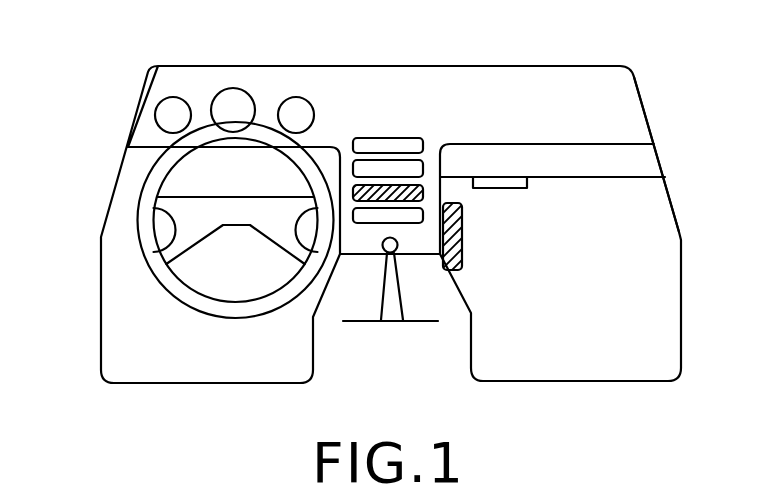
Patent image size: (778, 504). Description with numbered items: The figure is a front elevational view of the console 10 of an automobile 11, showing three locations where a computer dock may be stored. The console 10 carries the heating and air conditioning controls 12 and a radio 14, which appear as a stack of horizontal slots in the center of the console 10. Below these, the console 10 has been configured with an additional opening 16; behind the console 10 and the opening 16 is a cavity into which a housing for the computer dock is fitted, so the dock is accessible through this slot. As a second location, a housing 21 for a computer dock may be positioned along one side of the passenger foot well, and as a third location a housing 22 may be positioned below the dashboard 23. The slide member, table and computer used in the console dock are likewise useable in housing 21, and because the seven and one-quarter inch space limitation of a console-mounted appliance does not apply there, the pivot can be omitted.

The console 10 is at (440, 180).
The automobile 11 is at (126, 103).
The heating and air conditioning controls 12 is at (413, 138).
The radio 14 is at (425, 165).
The additional opening 16 is at (423, 191).
The housing 21 is at (463, 235).
The housing 22 is at (527, 177).
The dashboard 23 is at (642, 97).